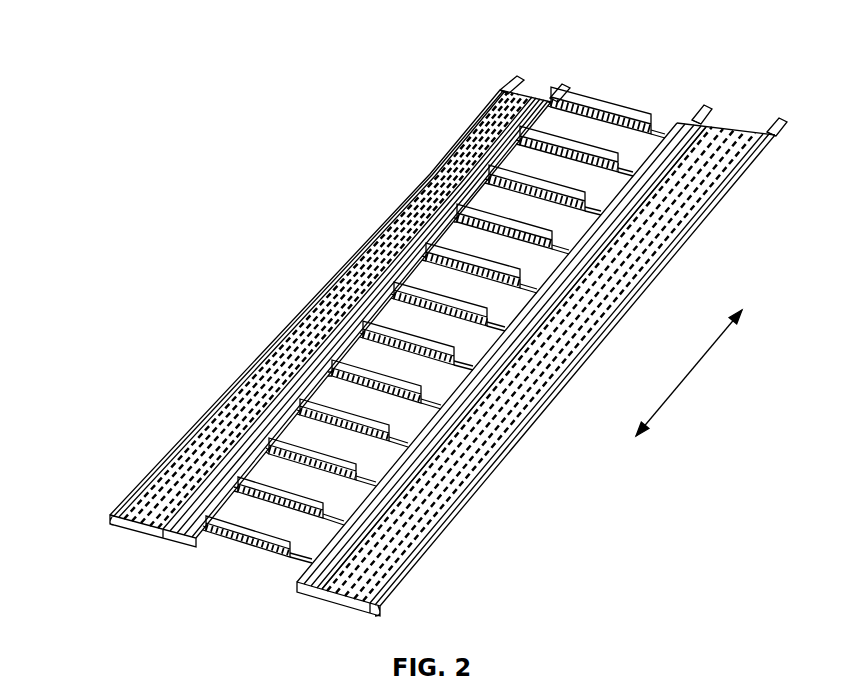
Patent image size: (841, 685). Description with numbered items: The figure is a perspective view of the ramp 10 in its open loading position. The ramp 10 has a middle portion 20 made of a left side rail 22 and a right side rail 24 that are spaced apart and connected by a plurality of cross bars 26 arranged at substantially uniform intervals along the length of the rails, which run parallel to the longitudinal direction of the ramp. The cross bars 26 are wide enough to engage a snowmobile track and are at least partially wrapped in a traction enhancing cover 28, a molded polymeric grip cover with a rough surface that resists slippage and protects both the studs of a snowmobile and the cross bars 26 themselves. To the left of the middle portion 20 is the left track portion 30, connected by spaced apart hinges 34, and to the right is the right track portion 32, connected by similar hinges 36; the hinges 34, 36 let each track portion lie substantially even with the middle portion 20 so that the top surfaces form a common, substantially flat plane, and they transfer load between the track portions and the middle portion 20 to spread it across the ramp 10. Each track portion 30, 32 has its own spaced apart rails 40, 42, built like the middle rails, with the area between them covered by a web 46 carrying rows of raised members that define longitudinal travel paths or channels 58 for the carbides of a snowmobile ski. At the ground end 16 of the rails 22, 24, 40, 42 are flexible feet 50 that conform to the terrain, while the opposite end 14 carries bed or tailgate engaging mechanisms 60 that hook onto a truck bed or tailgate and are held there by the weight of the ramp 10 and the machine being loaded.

The ramp 10 is at (324, 200).
The end 14 is at (478, 92).
The ends 16 is at (96, 512).
The middle portion 20 is at (737, 72).
The left side rail 22 is at (182, 544).
The right side rail 24 is at (297, 590).
The cross bars 26 is at (412, 290).
The traction enhancing cover 28 is at (393, 327).
The left track portion 30 is at (590, 60).
The right track portion 32 is at (744, 81).
The hinges 34 is at (500, 160).
The hinges 36 is at (435, 505).
The rail 40 is at (303, 317).
The rail 42 is at (161, 536).
The web 46 is at (250, 402).
The flexible feet 50 is at (116, 521).
The longitudinal travel paths or channels 58 is at (455, 215).
The bed or tailgate engaging mechanisms 60 is at (516, 79).